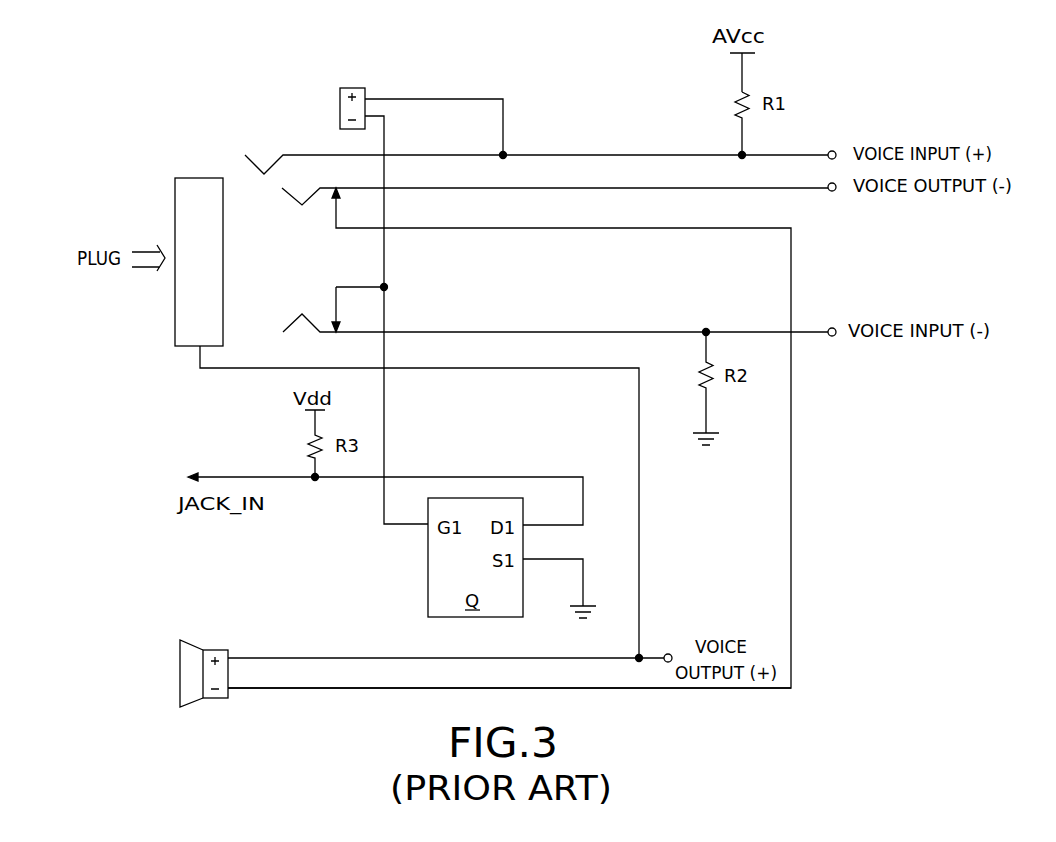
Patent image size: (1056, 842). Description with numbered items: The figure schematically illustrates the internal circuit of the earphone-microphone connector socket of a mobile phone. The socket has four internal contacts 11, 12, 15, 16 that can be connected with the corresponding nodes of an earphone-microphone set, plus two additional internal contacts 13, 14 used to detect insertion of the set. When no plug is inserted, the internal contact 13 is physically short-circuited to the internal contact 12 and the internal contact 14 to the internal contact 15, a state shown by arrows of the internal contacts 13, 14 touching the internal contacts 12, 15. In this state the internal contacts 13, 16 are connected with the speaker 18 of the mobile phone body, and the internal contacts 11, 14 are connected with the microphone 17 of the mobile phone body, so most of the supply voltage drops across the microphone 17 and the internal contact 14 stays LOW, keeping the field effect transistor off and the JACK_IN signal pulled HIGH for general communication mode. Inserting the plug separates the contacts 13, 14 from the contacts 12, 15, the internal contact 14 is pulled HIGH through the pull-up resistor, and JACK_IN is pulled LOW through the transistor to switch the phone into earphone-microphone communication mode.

The internal contact 11 is at (262, 152).
The internal contact 12 is at (292, 203).
The internal contact 13 is at (335, 228).
The internal contact 14 is at (336, 287).
The internal contact 15 is at (292, 319).
The internal contact 16 is at (182, 348).
The microphone 17 is at (353, 85).
The speaker 18 is at (218, 700).